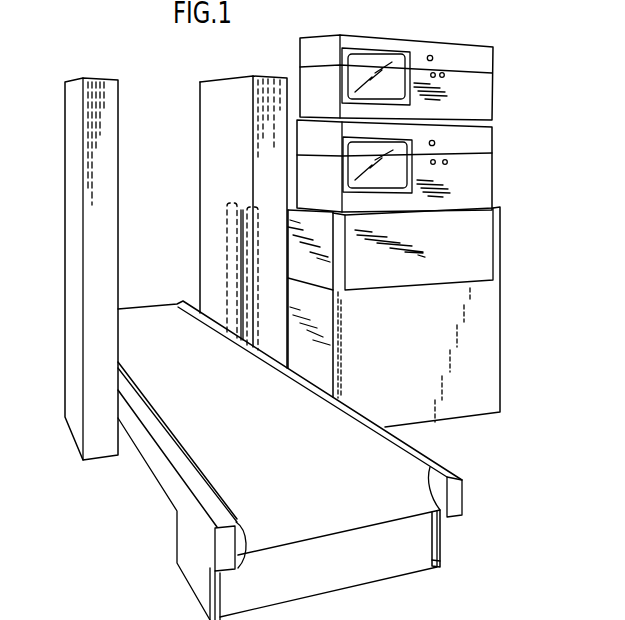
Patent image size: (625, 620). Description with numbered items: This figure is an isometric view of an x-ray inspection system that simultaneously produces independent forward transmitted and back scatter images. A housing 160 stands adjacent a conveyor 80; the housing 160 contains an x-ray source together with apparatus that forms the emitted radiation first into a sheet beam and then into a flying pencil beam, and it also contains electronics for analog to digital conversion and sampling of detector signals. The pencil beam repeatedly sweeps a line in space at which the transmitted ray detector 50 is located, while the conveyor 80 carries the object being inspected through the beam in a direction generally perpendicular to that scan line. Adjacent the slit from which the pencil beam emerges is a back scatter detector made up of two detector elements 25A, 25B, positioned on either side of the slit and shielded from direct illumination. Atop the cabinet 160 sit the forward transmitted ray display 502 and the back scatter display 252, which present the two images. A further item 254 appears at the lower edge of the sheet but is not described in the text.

The transmitted ray detector 50 is at (67, 245).
The detector element 25A is at (253, 206).
The detector element 25B is at (228, 228).
The conveyor 80 is at (237, 406).
The back scatter display 252 is at (495, 92).
The forward transmitted ray display 502 is at (493, 175).
The housing 160 is at (502, 318).
The conveyor support 254 is at (481, 590).